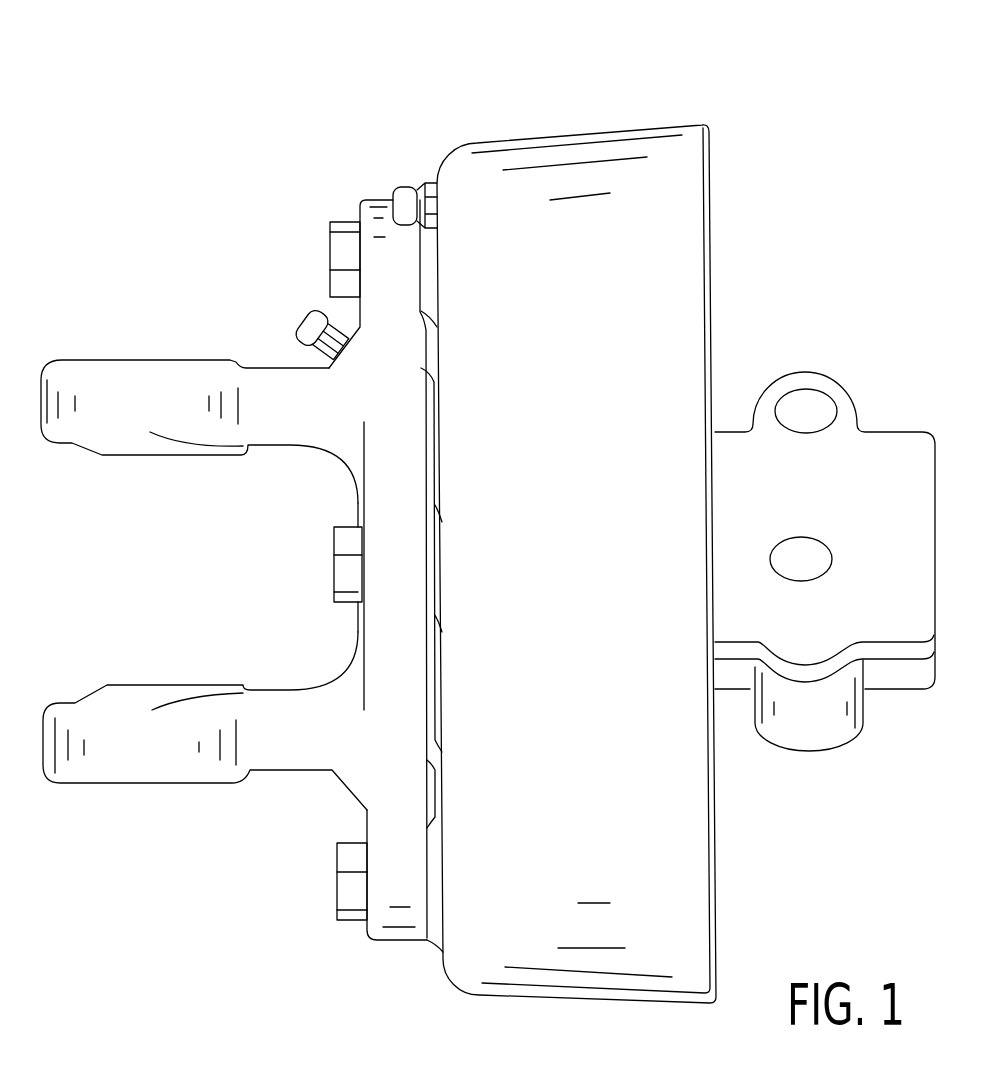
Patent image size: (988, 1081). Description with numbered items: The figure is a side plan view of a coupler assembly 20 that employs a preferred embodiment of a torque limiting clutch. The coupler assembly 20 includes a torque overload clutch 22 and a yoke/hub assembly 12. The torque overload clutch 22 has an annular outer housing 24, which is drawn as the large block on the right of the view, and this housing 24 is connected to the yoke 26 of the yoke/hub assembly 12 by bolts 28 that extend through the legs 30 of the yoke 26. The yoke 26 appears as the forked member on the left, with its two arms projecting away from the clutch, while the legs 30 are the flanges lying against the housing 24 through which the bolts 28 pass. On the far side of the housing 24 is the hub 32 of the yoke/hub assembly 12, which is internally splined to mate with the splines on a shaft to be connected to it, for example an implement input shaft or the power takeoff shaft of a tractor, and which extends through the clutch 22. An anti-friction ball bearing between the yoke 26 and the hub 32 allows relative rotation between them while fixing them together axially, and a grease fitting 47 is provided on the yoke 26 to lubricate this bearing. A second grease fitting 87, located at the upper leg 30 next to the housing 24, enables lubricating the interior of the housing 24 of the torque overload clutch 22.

The yoke/hub assembly 12 is at (346, 796).
The coupler assembly 20 is at (546, 62).
The torque overload clutch 22 is at (590, 126).
The annular outer housing 24 is at (483, 143).
The yoke 26 is at (120, 356).
The bolts 28 is at (330, 255).
The legs 30 is at (372, 205).
The hub 32 is at (875, 427).
The grease fitting 47 is at (300, 318).
The grease fitting 87 is at (397, 185).